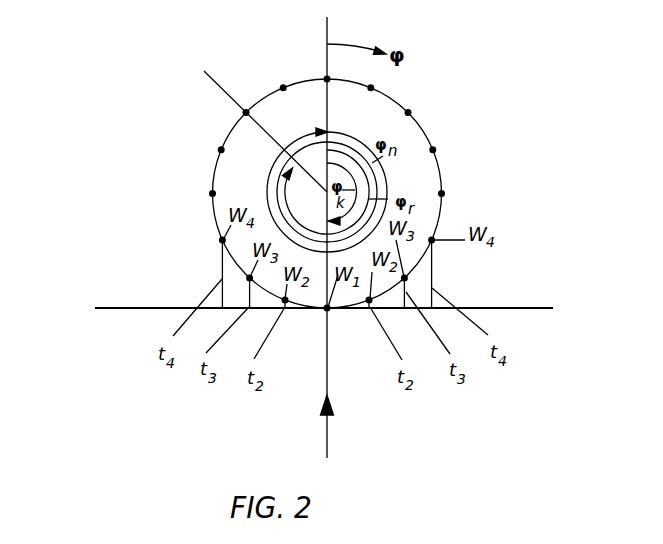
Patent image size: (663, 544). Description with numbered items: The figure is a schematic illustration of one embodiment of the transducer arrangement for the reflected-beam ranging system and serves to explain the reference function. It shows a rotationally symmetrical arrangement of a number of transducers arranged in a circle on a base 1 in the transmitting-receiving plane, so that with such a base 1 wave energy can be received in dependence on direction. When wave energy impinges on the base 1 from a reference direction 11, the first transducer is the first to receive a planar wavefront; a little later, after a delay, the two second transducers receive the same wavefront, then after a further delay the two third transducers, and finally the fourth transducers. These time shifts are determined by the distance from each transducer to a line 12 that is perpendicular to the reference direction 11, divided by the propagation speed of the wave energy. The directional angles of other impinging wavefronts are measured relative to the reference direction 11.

The base 1 is at (437, 92).
The reference direction 11 is at (330, 438).
The line 12 is at (518, 306).